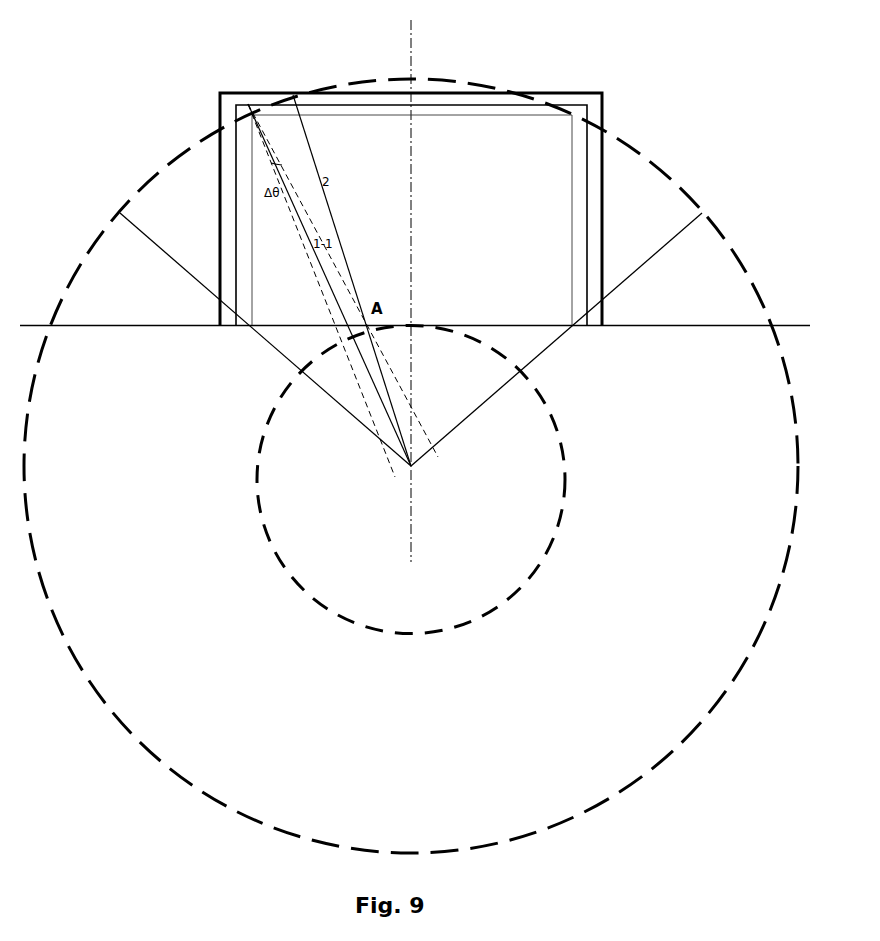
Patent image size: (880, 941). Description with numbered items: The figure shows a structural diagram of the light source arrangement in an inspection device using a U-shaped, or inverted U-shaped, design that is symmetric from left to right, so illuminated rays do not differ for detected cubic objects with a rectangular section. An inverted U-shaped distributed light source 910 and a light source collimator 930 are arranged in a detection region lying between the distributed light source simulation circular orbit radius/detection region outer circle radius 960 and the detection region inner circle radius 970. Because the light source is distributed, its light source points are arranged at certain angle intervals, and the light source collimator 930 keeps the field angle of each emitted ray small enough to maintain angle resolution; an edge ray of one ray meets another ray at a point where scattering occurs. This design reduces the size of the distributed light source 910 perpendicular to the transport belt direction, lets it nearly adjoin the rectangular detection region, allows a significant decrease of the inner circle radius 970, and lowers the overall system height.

The inverted U-shaped distributed light source 910 is at (503, 82).
The light source collimator 930 is at (575, 123).
The distributed light source simulation circular orbit radius/detection region outer 960 is at (83, 265).
The detection region inner circle radius 970 is at (555, 425).